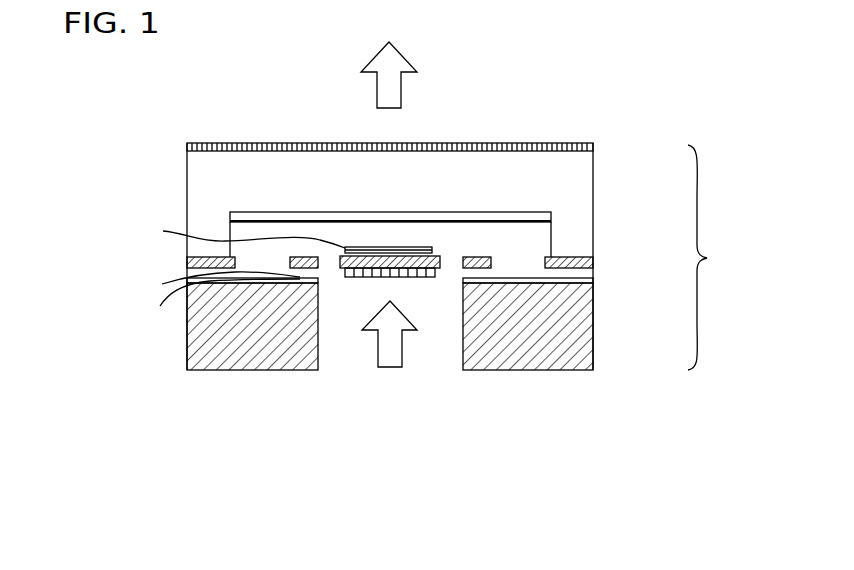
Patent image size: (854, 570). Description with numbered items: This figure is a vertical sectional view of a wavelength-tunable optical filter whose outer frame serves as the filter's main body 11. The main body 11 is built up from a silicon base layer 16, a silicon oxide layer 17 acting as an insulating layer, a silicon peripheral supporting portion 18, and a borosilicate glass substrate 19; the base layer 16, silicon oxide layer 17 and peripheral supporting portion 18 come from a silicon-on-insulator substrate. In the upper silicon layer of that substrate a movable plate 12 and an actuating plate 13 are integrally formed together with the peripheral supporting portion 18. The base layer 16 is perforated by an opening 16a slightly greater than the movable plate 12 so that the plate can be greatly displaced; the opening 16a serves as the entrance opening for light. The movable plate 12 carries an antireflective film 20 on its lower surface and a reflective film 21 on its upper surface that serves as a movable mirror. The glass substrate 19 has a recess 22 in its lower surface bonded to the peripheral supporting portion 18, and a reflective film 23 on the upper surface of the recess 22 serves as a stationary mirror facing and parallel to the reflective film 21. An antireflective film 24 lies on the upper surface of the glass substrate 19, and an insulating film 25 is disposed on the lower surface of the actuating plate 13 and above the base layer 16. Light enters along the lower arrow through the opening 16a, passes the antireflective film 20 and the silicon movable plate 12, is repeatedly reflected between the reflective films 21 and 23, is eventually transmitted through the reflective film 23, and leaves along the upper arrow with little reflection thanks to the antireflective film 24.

The filter's main body 11 is at (716, 257).
The movable plate 12 is at (437, 277).
The actuating plate 13 is at (490, 258).
The base layer 16 is at (593, 340).
The opening 16a is at (368, 342).
The silicon oxide layer 17 is at (593, 279).
The peripheral supporting portion 18 is at (593, 262).
The glass substrate 19 is at (580, 182).
The antireflective film 20 is at (350, 277).
The reflective film 21 is at (240, 235).
The recess 22 is at (425, 233).
The reflective film 23 is at (263, 212).
The antireflective film 24 is at (320, 143).
The insulating film 25 is at (217, 299).